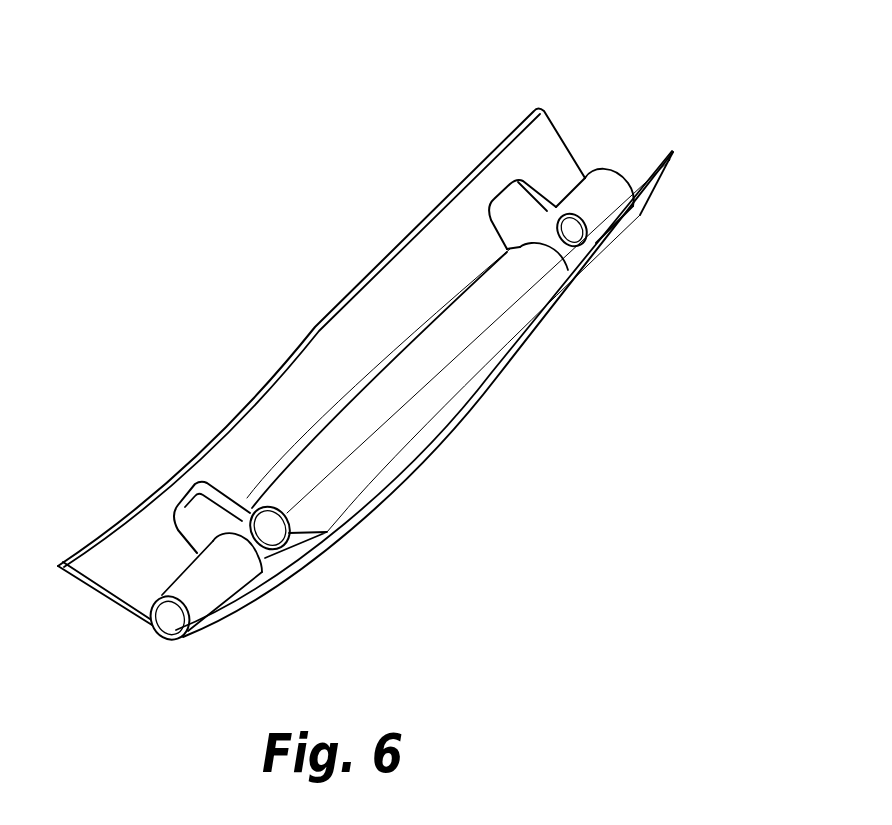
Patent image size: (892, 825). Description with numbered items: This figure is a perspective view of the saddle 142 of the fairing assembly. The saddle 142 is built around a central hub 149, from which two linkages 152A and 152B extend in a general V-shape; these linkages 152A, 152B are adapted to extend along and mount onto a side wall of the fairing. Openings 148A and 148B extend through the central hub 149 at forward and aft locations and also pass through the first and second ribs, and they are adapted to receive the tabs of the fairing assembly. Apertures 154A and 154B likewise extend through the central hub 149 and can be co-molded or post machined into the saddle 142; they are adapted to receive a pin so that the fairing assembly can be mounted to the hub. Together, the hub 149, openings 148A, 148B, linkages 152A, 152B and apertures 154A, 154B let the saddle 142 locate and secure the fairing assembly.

The saddle 142 is at (638, 96).
The opening 148A is at (175, 497).
The opening 148B is at (502, 196).
The central hub 149 is at (373, 418).
The linkage 152A is at (427, 457).
The linkage 152B is at (243, 417).
The aperture 154A is at (167, 644).
The aperture 154B is at (572, 260).